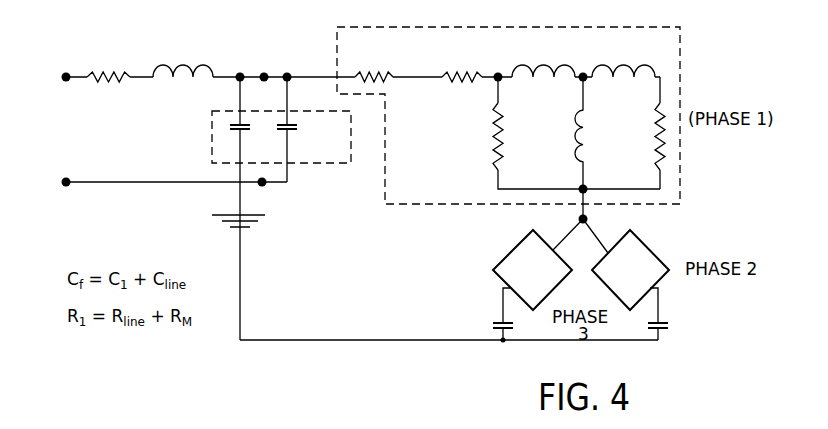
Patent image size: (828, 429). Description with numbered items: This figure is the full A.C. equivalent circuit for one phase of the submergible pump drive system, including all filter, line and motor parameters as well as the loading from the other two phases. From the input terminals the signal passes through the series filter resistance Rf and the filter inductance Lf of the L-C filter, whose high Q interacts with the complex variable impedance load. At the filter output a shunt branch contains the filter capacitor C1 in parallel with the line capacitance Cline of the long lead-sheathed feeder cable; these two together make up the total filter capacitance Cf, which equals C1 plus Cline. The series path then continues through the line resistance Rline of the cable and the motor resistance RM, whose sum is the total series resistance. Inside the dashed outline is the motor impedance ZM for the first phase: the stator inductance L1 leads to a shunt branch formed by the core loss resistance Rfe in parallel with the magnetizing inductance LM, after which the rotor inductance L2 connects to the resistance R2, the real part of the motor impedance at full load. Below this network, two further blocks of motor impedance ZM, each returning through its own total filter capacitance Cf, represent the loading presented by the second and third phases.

The filter resistance Rf is at (108, 61).
The filter inductance Lf is at (183, 59).
The line resistance Rline is at (370, 63).
The motor resistance RM is at (461, 63).
The stator inductance L1 is at (543, 59).
The rotor inductance L2 is at (623, 59).
The core loss resistance Rfe is at (557, 133).
The magnetizing inductance LM is at (565, 148).
The real part of motor impedance R2 is at (646, 133).
The filter capacitor C1 is at (213, 133).
The line capacitance Cline is at (304, 138).
The total filter capacitance Cf is at (429, 244).
The motor phase impedance ZM is at (601, 196).